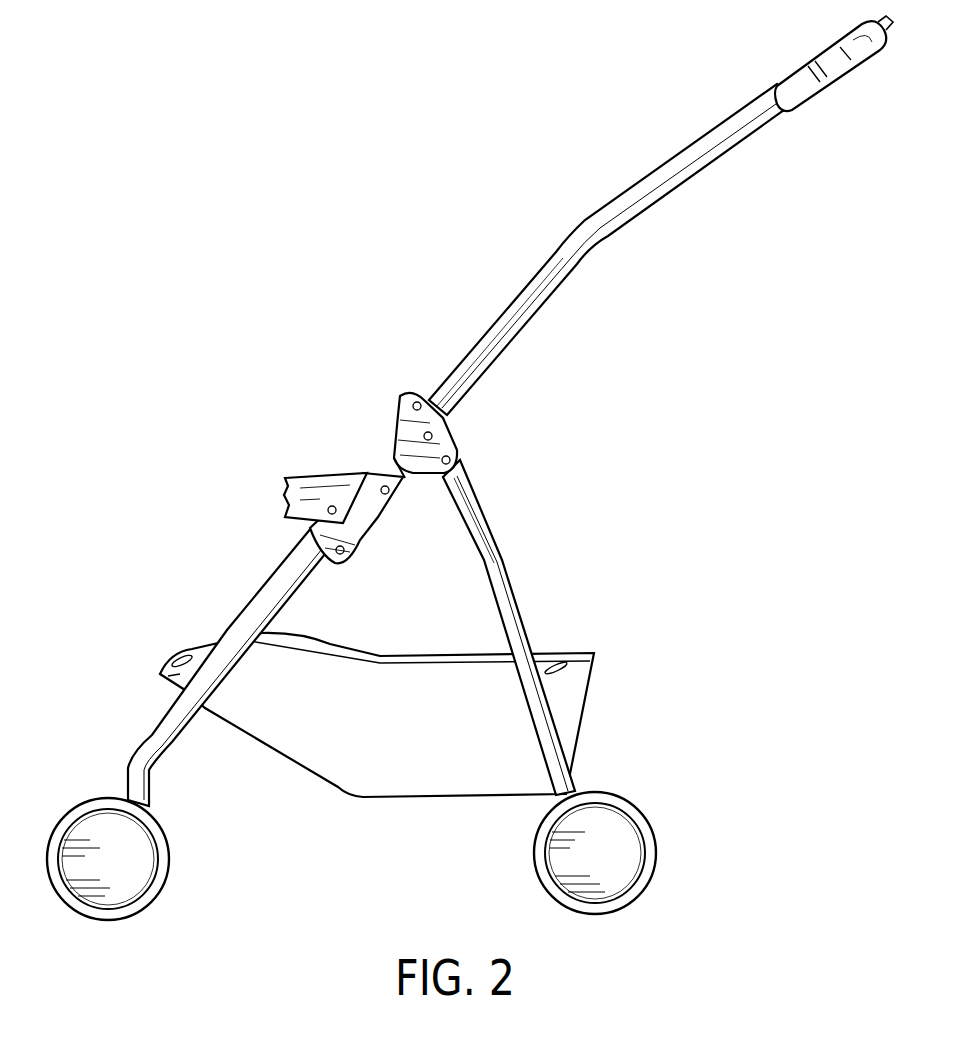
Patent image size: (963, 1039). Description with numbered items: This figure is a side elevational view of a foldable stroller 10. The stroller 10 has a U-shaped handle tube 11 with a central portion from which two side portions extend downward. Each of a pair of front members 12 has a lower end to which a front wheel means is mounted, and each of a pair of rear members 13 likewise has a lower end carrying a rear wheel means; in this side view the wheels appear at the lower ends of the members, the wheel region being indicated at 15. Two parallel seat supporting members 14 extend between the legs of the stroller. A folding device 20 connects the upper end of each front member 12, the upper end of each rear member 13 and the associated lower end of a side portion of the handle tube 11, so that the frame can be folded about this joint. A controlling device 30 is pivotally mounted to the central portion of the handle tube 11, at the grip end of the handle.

The foldable stroller 10 is at (643, 220).
The U-shaped handle tube 11 is at (522, 334).
The front member 12 is at (264, 594).
The rear member 13 is at (486, 543).
The seat supporting member 14 is at (590, 651).
The wheel 15 is at (648, 830).
The folding device 20 is at (340, 449).
The controlling device 30 is at (872, 66).